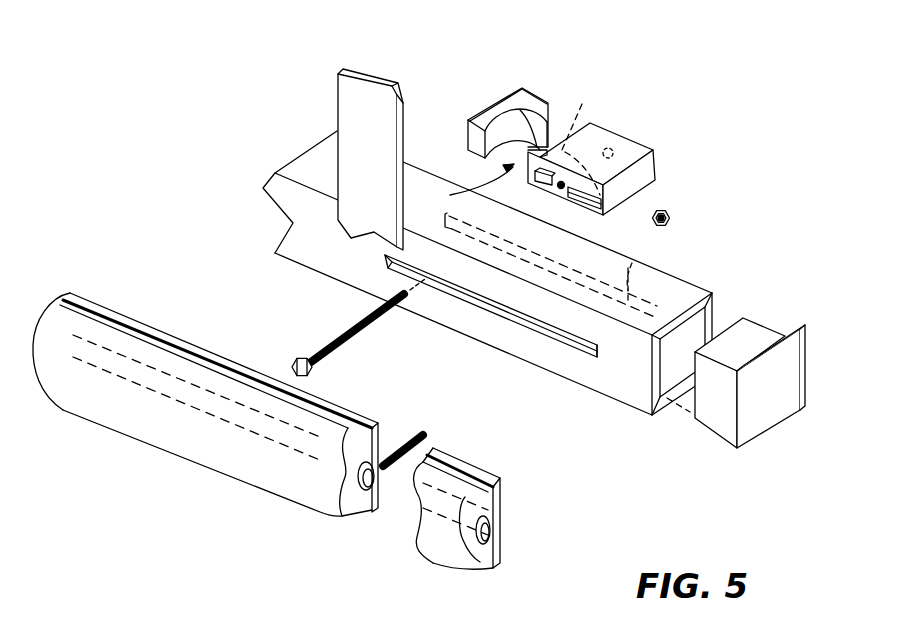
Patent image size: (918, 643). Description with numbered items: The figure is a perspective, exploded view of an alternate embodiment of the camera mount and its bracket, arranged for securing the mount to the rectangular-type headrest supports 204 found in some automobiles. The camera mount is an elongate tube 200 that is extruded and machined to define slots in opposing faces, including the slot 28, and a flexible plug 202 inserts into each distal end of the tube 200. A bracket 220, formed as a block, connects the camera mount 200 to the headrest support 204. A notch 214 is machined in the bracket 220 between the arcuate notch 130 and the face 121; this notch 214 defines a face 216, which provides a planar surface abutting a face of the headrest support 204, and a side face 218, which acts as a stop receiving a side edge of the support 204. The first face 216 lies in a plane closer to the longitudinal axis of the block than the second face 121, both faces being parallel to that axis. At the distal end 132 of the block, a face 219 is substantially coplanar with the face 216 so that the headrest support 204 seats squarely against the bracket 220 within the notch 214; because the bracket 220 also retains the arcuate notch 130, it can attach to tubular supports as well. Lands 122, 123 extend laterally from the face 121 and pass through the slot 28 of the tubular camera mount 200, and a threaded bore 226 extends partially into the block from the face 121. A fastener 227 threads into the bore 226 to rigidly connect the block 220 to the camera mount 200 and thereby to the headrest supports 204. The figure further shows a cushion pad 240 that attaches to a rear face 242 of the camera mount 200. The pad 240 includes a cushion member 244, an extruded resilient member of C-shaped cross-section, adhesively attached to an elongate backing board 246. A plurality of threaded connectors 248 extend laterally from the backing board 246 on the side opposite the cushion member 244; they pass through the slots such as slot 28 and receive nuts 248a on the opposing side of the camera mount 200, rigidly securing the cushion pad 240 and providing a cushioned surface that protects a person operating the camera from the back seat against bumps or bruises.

The slot 28 is at (632, 263).
The face 121 is at (603, 52).
The land 122 is at (527, 198).
The land 123 is at (583, 198).
The arcuate notch 130 is at (465, 186).
The distal end 132 is at (488, 110).
The elongate tube 200 is at (711, 292).
The flexible plug 202 is at (760, 338).
The headrest support 204 is at (352, 118).
The notch 214 is at (600, 116).
The face 216 is at (538, 150).
The side face 218 is at (576, 139).
The face 219 is at (475, 132).
The bracket 220 is at (627, 127).
The threaded bore 226 is at (655, 180).
The fastener 227 is at (293, 362).
The cushion pad 240 is at (428, 408).
The rear face 242 is at (507, 338).
The cushion member 244 is at (303, 420).
The backing board 246 is at (247, 367).
The threaded connector 248 is at (422, 436).
The nut 248a is at (672, 222).